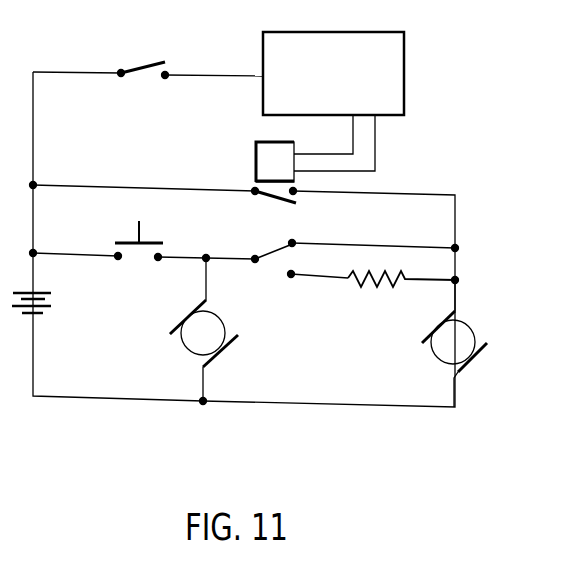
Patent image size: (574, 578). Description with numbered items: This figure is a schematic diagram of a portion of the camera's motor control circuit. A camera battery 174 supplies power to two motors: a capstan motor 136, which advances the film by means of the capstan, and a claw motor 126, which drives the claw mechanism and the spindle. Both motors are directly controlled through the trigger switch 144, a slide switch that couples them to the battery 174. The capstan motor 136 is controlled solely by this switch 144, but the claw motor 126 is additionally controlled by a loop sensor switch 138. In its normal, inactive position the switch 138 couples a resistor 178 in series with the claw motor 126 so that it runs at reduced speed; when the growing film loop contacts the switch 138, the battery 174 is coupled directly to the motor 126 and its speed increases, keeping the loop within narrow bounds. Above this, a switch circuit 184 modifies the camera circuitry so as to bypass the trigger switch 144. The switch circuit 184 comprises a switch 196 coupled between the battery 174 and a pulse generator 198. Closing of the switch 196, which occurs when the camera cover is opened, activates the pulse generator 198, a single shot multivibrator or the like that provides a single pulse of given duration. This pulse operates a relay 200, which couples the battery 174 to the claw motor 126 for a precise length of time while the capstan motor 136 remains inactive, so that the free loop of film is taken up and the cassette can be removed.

The switch 196 is at (137, 66).
The pulse generator 198 is at (404, 48).
The relay 200 is at (258, 160).
The switch circuit 184 is at (413, 173).
The trigger switch 144 is at (139, 222).
The loop sensor switch 138 is at (283, 249).
The capstan motor 136 is at (214, 318).
The camera battery 174 is at (51, 300).
The resistor 178 is at (378, 288).
The claw motor 126 is at (465, 332).